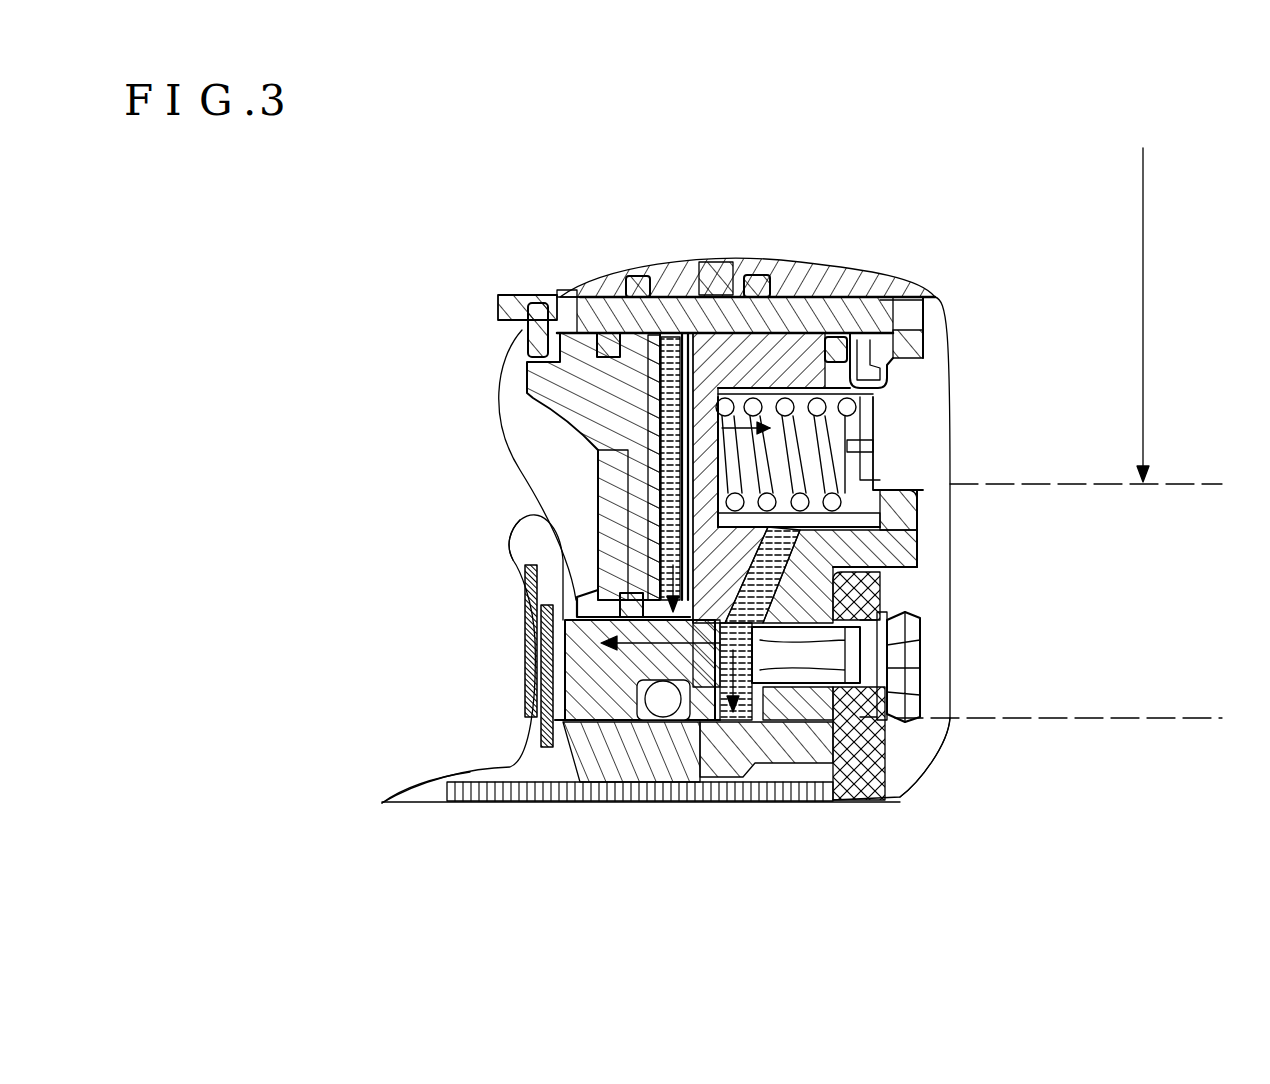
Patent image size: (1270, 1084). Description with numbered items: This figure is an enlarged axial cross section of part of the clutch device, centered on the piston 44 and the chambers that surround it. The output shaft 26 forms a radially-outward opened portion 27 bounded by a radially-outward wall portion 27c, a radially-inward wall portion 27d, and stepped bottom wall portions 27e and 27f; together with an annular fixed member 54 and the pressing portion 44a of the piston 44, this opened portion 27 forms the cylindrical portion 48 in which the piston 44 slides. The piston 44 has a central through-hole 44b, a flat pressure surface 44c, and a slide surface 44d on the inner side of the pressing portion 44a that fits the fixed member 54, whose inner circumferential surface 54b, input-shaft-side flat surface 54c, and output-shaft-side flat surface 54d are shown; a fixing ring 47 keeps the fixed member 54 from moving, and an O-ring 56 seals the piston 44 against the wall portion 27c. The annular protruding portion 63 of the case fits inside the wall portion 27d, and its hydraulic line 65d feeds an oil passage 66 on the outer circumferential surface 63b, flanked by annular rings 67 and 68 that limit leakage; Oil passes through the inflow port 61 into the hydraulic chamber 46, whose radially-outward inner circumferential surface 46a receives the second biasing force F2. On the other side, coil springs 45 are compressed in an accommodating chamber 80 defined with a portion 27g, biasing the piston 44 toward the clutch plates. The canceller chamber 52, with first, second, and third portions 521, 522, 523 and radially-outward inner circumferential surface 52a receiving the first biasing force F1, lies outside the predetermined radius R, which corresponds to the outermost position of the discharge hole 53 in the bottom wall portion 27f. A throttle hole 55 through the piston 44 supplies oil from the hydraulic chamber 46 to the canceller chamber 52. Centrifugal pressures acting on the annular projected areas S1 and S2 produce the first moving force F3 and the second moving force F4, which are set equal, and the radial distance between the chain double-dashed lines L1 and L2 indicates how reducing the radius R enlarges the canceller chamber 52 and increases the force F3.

The radially-outward opened portion 27 is at (803, 782).
The radially-outward wall portion 27c is at (717, 782).
The radially-inward wall portion 27d is at (908, 294).
The bottom wall portion 27e is at (887, 747).
The bottom wall portion 27f is at (925, 342).
The portion of the radially-outward opened portion 27g is at (880, 372).
The output shaft 26 is at (907, 622).
The piston 44 is at (920, 560).
The pressing portion 44a is at (613, 677).
The through-hole 44b is at (850, 312).
The pressure surface 44c is at (887, 587).
The slide surface 44d is at (560, 640).
The coil springs 45 is at (945, 463).
The hydraulic chamber 46 is at (625, 548).
The radially-outward inner circumferential surface 46a is at (528, 585).
The fixing ring 47 is at (528, 338).
The cylindrical portion 48 is at (927, 537).
The canceller chamber 52 is at (850, 650).
The radially-outward inner circumferential surface 52a is at (873, 800).
The first portion 521 is at (920, 508).
The second portion 522 is at (897, 595).
The third portion 523 is at (897, 675).
The discharge hole 53 is at (910, 432).
The fixed member 54 is at (625, 442).
The inner circumferential surface 54b is at (578, 288).
The input-shaft-side flat surface 54c is at (600, 490).
The output-shaft-side flat surface 54d is at (655, 445).
The throttle hole 55 is at (735, 275).
The O-ring 56 is at (627, 787).
The inflow port 61 is at (694, 275).
The protruding portion 63 is at (858, 280).
The outer circumferential surface 63b is at (860, 400).
The hydraulic line 65d is at (690, 272).
The oil passage 66 is at (668, 275).
The annular ring 67 is at (628, 278).
The annular ring 68 is at (770, 272).
The accommodating chamber 80 is at (947, 445).
The first biasing force F1 is at (905, 672).
The second biasing force F2 is at (600, 560).
The first moving force F3 is at (670, 648).
The second moving force F4 is at (740, 398).
The annular projected area S1 is at (790, 533).
The annular projected area S2 is at (667, 460).
The predetermined radius R is at (1153, 315).
The chain double-dashed line L1 is at (1106, 485).
The chain double-dashed line L2 is at (1079, 722).
The oil Oil is at (650, 402).